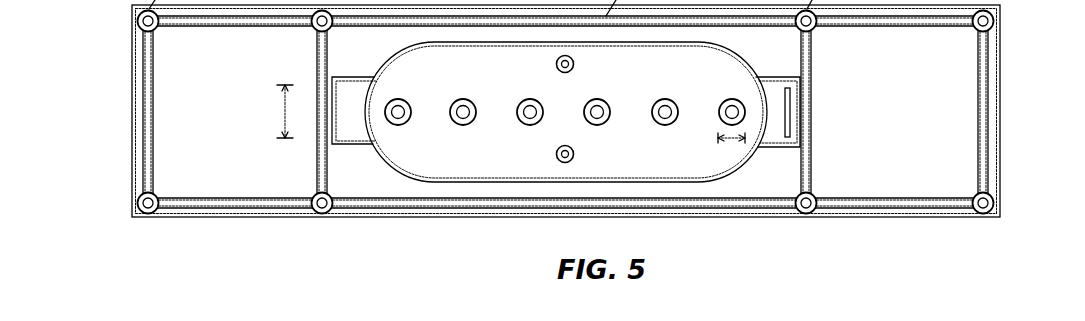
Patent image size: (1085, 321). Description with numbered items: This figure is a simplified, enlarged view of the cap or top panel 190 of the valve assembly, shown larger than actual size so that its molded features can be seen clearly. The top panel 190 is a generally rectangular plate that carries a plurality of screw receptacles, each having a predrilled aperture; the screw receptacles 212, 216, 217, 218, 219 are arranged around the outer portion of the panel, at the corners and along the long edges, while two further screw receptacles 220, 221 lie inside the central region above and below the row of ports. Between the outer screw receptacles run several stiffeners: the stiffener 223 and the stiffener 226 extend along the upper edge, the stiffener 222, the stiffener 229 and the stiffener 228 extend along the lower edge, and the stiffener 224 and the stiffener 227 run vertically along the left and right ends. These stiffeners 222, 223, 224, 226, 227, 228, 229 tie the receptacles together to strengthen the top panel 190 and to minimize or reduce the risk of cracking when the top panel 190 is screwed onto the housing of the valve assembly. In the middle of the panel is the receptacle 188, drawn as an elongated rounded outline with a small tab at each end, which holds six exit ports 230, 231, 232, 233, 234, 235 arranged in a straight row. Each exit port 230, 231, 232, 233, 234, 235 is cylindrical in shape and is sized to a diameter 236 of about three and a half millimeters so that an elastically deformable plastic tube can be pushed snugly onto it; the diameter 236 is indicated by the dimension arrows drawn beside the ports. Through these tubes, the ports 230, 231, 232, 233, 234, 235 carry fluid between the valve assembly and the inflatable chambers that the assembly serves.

The top panel 190 is at (1002, 174).
The screw receptacle 212 is at (995, 20).
The screw receptacle 216 is at (150, 214).
The screw receptacle 217 is at (324, 214).
The screw receptacle 218 is at (808, 214).
The screw receptacle 219 is at (985, 214).
The stiffener 222 is at (245, 198).
The stiffener 223 is at (238, 27).
The stiffener 224 is at (153, 103).
The stiffener 226 is at (870, 27).
The stiffener 227 is at (978, 72).
The stiffener 228 is at (873, 198).
The stiffener 229 is at (573, 190).
The receptacle 188 is at (735, 178).
The screw receptacle 220 is at (575, 64).
The screw receptacle 221 is at (575, 155).
The exit port 230 is at (740, 102).
The exit port 231 is at (667, 98).
The exit port 232 is at (597, 98).
The exit port 233 is at (530, 98).
The exit port 234 is at (464, 126).
The exit port 235 is at (398, 98).
The diameter 236 is at (283, 117).